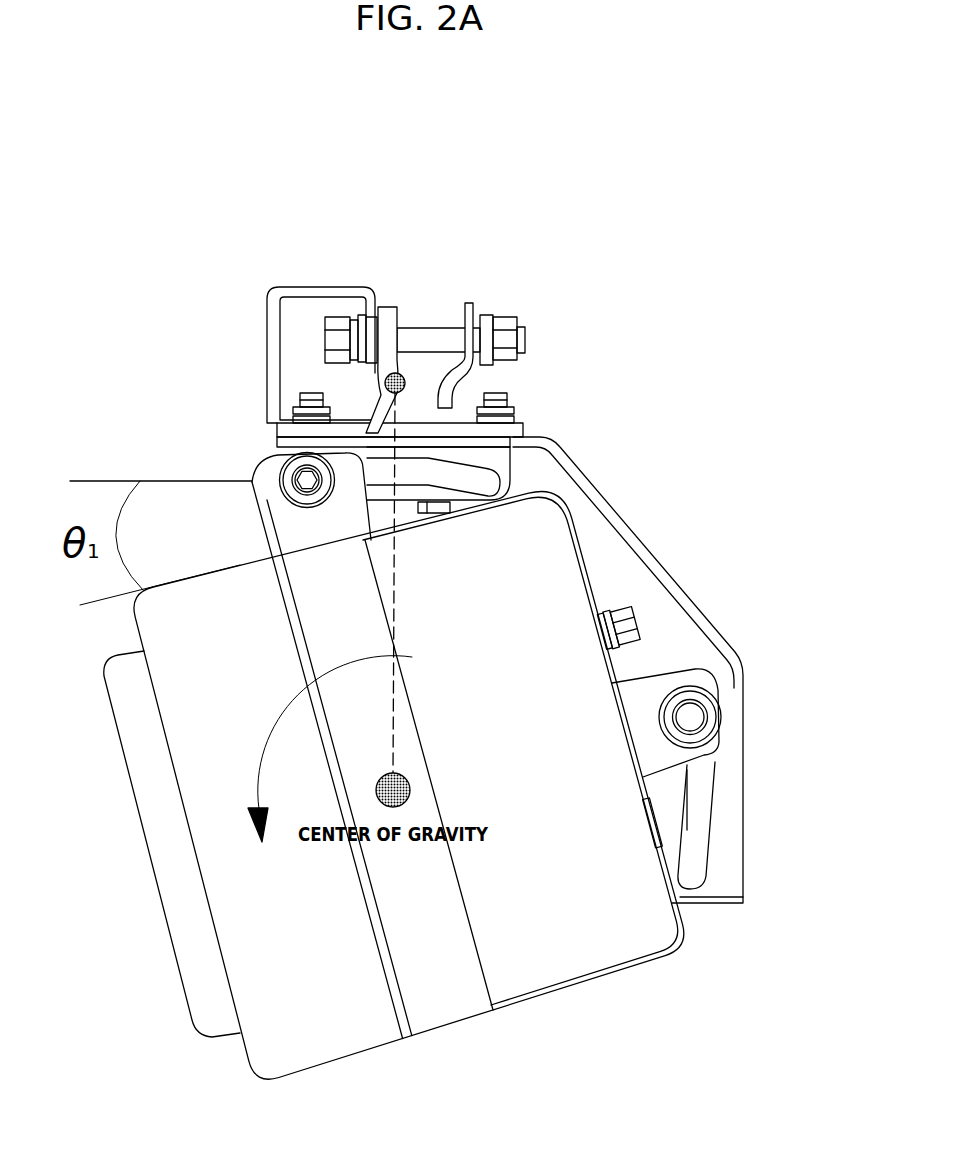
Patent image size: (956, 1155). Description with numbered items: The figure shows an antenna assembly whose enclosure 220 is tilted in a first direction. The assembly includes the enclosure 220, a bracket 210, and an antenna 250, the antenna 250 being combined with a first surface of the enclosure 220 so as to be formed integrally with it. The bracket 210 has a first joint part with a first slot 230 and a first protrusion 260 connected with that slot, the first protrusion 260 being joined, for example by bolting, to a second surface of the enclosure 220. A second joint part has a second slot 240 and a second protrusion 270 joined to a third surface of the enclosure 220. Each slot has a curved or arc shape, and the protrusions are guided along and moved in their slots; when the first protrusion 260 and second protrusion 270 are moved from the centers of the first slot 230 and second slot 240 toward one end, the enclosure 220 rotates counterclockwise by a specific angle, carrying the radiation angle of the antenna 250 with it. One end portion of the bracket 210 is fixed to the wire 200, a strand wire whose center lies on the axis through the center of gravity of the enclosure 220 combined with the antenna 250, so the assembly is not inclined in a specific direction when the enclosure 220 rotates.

The wire 200 is at (398, 376).
The bracket 210 is at (320, 278).
The enclosure 220 is at (462, 1020).
The first slot 230 is at (530, 477).
The second slot 240 is at (700, 803).
The antenna 250 is at (152, 885).
The first protrusion 260 is at (305, 476).
The second protrusion 270 is at (690, 712).